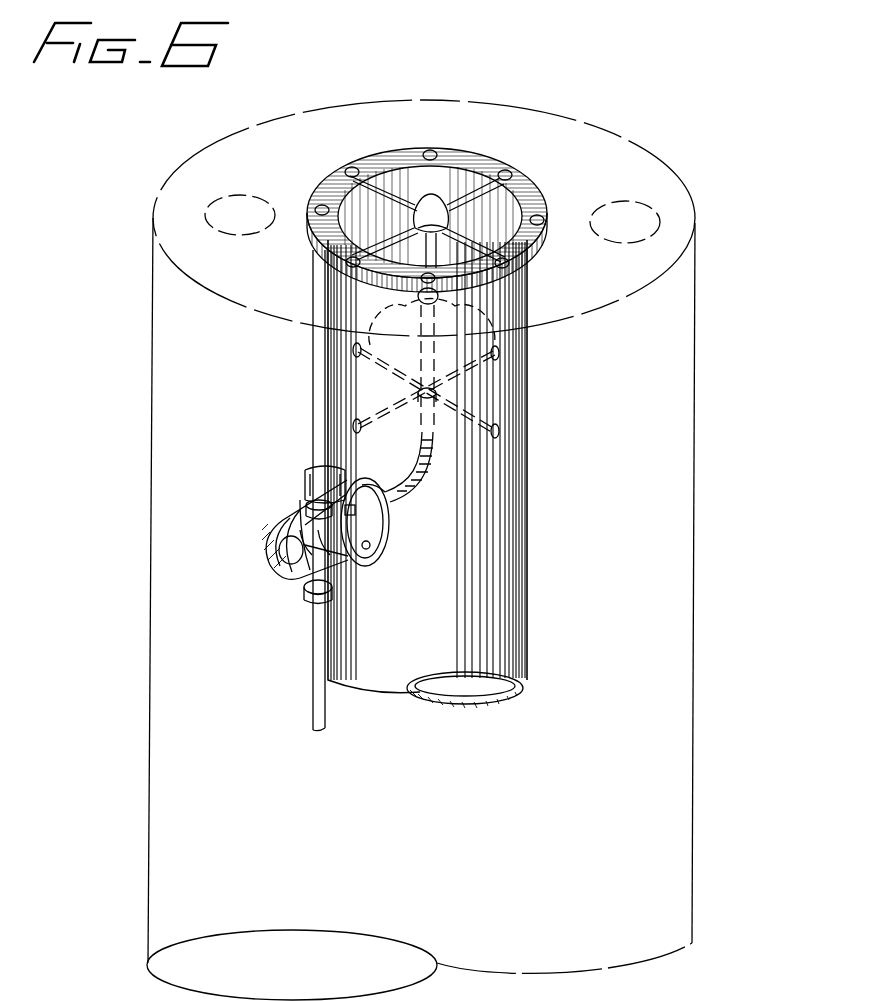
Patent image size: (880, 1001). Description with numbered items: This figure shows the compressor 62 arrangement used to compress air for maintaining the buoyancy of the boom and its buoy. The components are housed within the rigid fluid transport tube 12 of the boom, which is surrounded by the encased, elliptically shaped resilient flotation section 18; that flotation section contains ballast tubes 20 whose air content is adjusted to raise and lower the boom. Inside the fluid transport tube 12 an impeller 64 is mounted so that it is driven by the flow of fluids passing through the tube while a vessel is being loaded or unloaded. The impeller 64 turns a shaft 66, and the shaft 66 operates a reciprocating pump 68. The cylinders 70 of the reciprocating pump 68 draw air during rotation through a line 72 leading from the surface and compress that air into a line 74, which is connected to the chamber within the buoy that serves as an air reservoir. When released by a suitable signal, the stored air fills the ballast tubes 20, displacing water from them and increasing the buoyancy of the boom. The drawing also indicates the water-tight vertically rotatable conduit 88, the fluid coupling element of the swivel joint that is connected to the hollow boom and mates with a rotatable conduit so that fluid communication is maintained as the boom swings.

The rigid fluid transport tube 12 is at (527, 480).
The flotation section 18 is at (697, 352).
The ballast tubes 20 is at (220, 203).
The compressor 62 is at (368, 165).
The impeller 64 is at (525, 308).
The shaft 66 is at (433, 458).
The reciprocating pump 68 is at (340, 476).
The cylinders 70 is at (334, 592).
The line 72 is at (313, 402).
The line 74 is at (313, 668).
The vertically rotatable conduit 88 is at (305, 488).